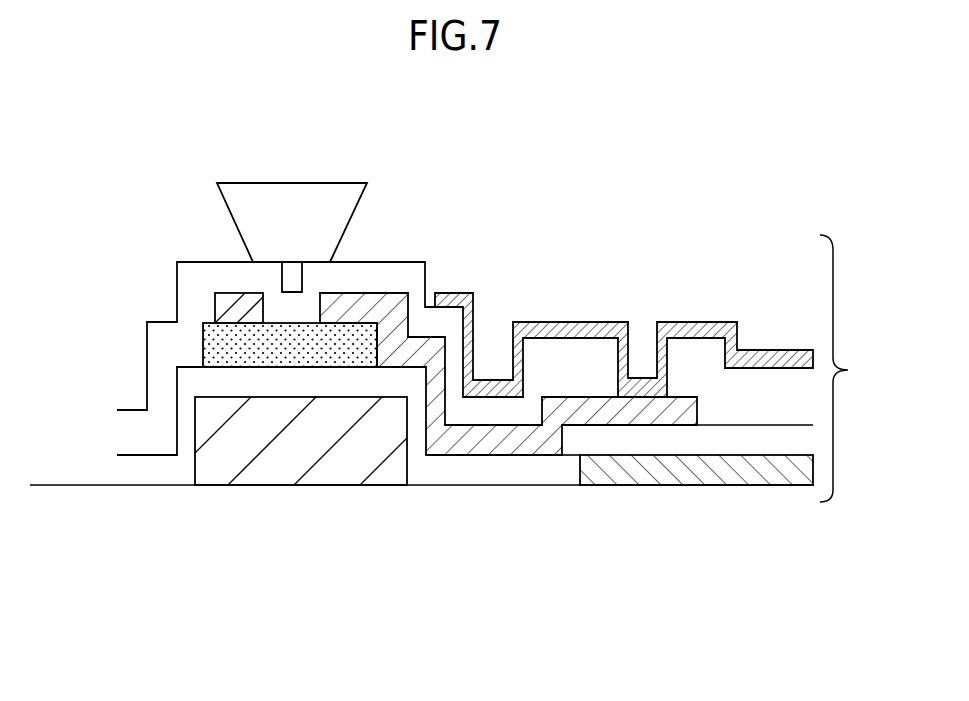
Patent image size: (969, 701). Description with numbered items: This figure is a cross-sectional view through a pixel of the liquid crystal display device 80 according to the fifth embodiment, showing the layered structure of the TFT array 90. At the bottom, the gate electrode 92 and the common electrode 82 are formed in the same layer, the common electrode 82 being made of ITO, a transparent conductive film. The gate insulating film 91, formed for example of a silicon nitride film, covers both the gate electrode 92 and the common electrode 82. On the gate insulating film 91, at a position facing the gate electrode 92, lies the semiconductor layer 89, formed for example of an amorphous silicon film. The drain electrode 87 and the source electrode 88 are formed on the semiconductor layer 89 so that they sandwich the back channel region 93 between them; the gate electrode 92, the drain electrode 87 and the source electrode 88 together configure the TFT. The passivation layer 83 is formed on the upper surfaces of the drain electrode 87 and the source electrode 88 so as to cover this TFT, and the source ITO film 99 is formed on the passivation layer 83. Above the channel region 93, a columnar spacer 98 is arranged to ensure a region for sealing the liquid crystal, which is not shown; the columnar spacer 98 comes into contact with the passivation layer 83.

The liquid crystal display device 80 is at (704, 169).
The common electrode 82 is at (730, 468).
The passivation layer 83 is at (172, 342).
The drain electrode 87 is at (215, 307).
The source electrode 88 is at (358, 307).
The semiconductor layer 89 is at (233, 343).
The TFT array 90 is at (850, 368).
The gate insulating film 91 is at (147, 458).
The gate electrode 92 is at (296, 440).
The channel region 93 is at (297, 316).
The columnar spacer 98 is at (348, 200).
The source ITO film 99 is at (697, 322).